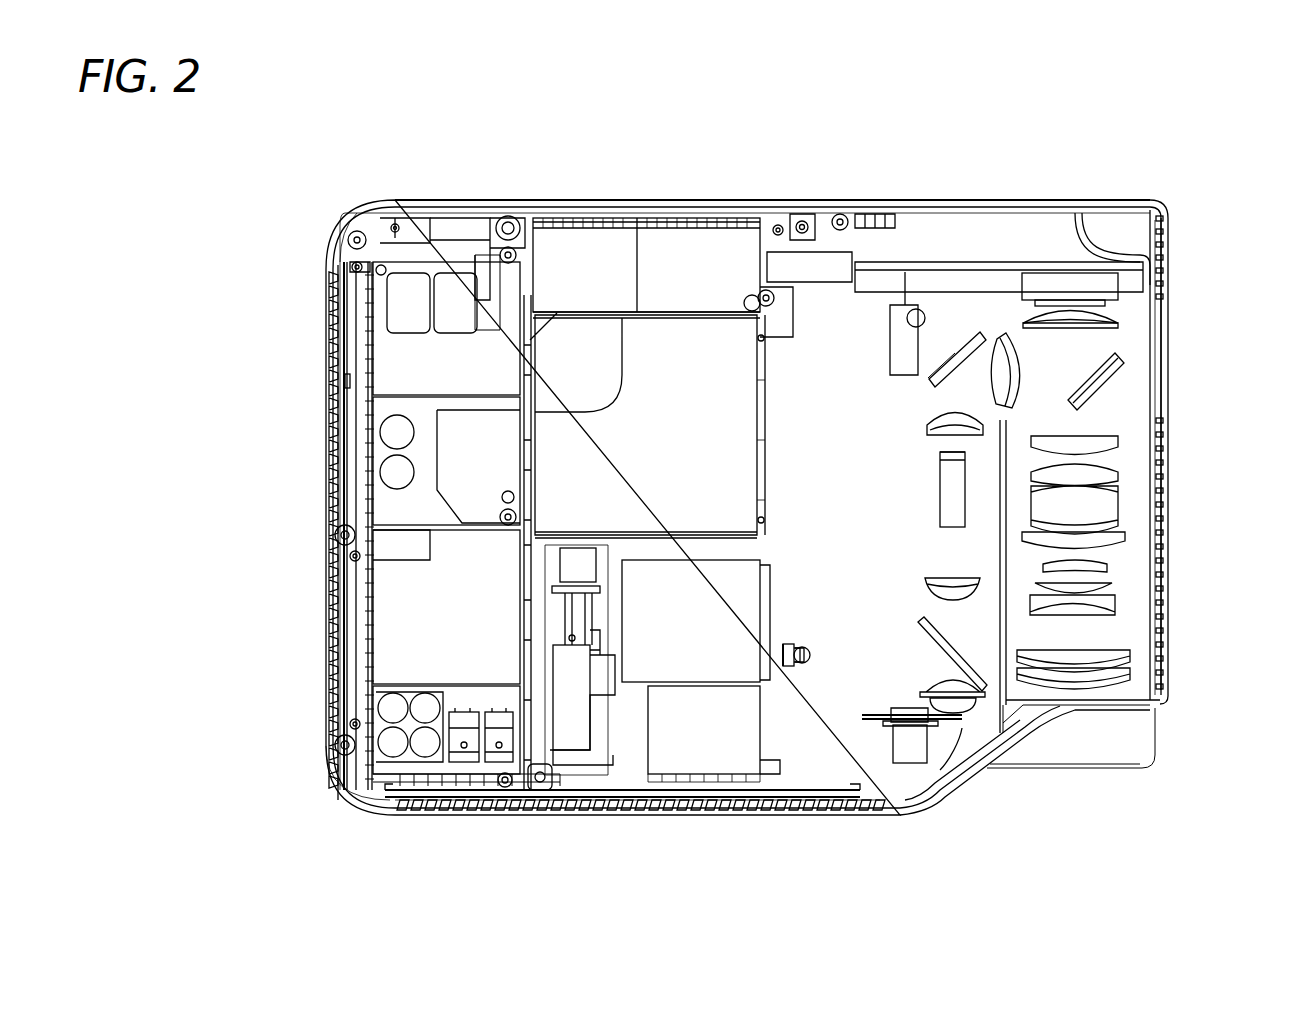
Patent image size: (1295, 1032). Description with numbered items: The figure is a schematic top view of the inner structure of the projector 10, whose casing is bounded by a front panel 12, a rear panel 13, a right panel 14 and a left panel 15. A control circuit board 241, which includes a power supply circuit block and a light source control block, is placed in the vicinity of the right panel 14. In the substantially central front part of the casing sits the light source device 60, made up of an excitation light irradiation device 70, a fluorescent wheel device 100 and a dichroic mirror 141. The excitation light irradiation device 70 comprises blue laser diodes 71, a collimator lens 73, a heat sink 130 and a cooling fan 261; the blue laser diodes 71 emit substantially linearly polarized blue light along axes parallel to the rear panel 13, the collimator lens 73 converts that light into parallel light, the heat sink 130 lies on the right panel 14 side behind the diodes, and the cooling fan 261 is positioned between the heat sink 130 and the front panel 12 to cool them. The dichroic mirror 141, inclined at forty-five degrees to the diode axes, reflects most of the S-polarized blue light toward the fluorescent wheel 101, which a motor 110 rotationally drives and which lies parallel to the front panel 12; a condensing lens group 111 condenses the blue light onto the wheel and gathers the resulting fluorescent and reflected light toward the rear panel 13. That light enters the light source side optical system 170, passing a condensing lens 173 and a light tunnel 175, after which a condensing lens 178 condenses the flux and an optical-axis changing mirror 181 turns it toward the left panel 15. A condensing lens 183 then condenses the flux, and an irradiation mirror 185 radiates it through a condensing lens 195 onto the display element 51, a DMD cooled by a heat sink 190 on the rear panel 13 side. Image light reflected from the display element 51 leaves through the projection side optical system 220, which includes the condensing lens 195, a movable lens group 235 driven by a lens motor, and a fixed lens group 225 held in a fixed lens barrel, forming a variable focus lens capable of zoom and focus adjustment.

The projector 10 is at (1178, 186).
The front panel 12 is at (457, 815).
The rear panel 13 is at (630, 200).
The right panel 14 is at (345, 383).
The left panel 15 is at (1168, 653).
The display element 51 is at (1105, 302).
The light source device 60 is at (872, 598).
The excitation light irradiation device 70 is at (803, 623).
The blue laser diodes 71 is at (789, 665).
The collimator lens 73 is at (806, 660).
The fluorescent wheel device 100 is at (918, 770).
The fluorescent wheel 101 is at (878, 722).
The motor 110 is at (910, 750).
The condensing lens group 111 is at (968, 738).
The heat sink 130 is at (655, 617).
The dichroic mirror 141 is at (953, 650).
The light source side optical system 170 is at (975, 330).
The condensing lens 173 is at (950, 577).
The light tunnel 175 is at (1005, 548).
The condensing lens 178 is at (953, 418).
The optical-axis changing mirror 181 is at (954, 350).
The condensing lens 183 is at (1015, 355).
The irradiation mirror 185 is at (1100, 383).
The heat sink 190 is at (1040, 240).
The condensing lens 195 is at (1110, 323).
The projection side optical system 220 is at (1136, 515).
The fixed lens group 225 is at (1110, 686).
The movable lens group 235 is at (1136, 466).
The control circuit board 241 is at (428, 570).
The cooling fan 261 is at (690, 750).